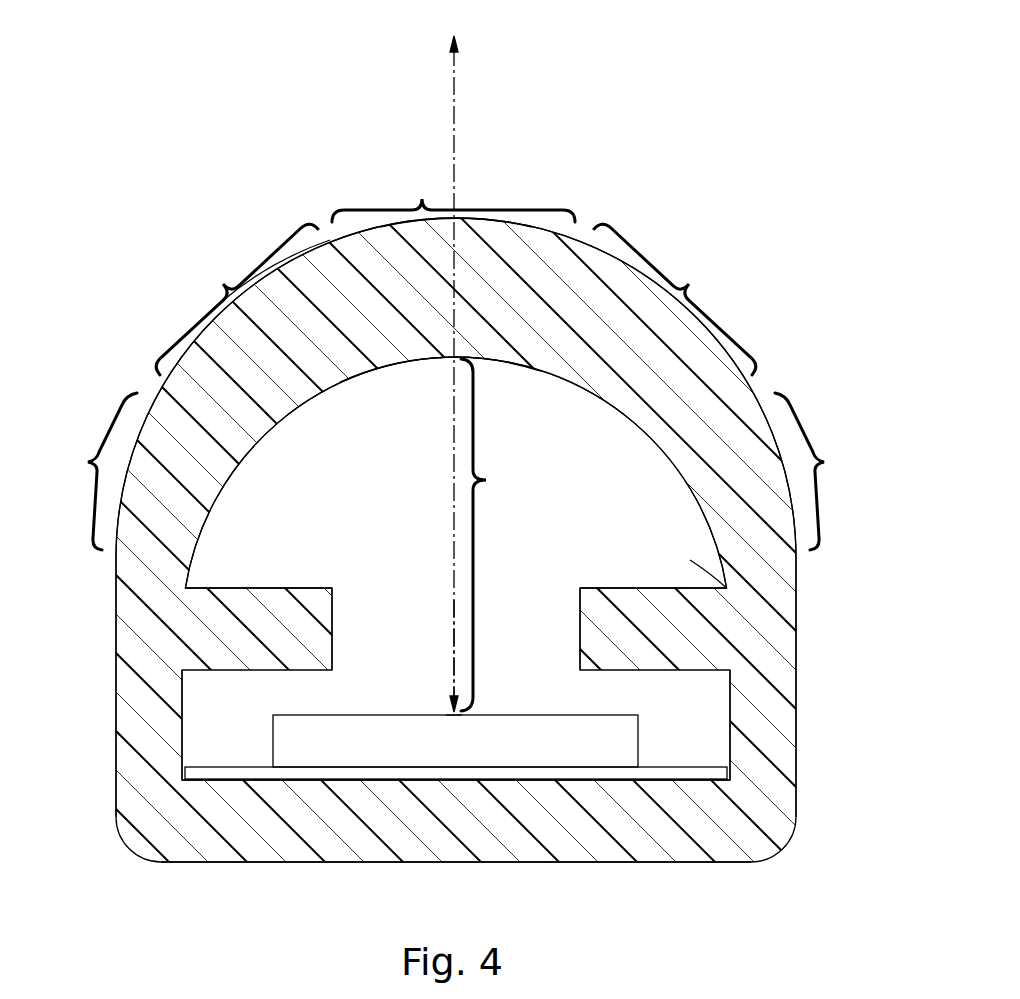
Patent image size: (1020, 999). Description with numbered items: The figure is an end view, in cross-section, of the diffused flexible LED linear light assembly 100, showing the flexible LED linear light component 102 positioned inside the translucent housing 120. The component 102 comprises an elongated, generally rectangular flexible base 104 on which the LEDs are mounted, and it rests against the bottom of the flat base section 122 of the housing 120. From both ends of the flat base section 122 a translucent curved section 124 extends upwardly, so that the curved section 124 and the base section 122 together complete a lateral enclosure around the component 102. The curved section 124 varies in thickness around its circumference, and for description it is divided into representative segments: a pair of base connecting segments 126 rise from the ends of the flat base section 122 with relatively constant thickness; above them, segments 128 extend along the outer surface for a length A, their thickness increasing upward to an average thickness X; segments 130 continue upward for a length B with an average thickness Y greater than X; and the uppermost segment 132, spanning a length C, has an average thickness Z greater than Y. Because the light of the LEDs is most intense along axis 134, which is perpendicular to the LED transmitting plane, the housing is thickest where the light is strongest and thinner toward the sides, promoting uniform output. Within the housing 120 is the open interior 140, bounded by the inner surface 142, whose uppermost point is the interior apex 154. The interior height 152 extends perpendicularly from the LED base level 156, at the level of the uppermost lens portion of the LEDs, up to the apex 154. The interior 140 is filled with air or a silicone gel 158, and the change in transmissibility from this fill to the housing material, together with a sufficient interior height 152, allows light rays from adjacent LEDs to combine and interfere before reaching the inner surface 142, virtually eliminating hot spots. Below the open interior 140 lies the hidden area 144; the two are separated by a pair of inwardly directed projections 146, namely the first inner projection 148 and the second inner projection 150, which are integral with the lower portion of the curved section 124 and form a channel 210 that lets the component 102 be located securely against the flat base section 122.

The diffused flexible LED linear light assembly 100 is at (510, 457).
The flexible LED linear light component 102 is at (353, 713).
The flexible base 104 is at (662, 768).
The translucent housing 120 is at (722, 347).
The flat base section 122 is at (322, 862).
The translucent curved section 124 is at (653, 277).
The base connecting segments 126 is at (113, 663).
The segments 128 is at (797, 495).
The segments 130 is at (263, 277).
The segment 132 is at (480, 217).
The axis 134 is at (455, 97).
The interior 140 is at (378, 556).
The inner surface 142 is at (345, 380).
The hidden area 144 is at (206, 734).
The inwardly directed projections 146 is at (262, 618).
The first inner projection 148 is at (332, 635).
The second inner projection 150 is at (580, 625).
The interior height 152 is at (494, 535).
The interior apex 154 is at (452, 358).
The LED base level 156 is at (460, 710).
The silicone gel 158 is at (700, 570).
The channel 210 is at (496, 633).